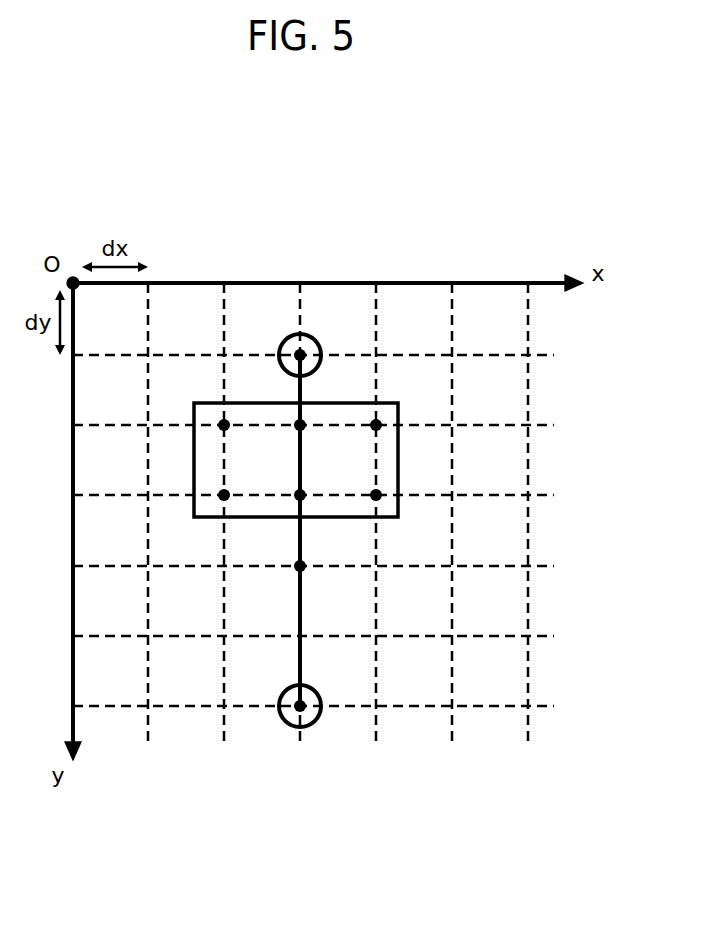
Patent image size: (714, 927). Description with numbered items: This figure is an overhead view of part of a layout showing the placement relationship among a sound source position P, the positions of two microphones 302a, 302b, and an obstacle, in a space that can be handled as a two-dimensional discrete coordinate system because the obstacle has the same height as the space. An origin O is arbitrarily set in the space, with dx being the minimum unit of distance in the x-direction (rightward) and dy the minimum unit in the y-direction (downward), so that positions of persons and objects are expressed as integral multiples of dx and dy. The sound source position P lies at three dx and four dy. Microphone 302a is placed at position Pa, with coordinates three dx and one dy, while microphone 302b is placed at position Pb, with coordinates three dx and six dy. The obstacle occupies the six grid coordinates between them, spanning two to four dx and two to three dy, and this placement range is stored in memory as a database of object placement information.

The microphone 302a is at (318, 338).
The microphone 302b is at (310, 718).
The sound source position P is at (303, 568).
The position of microphone 302a Pa is at (298, 350).
The position of microphone 302b Pb is at (299, 708).